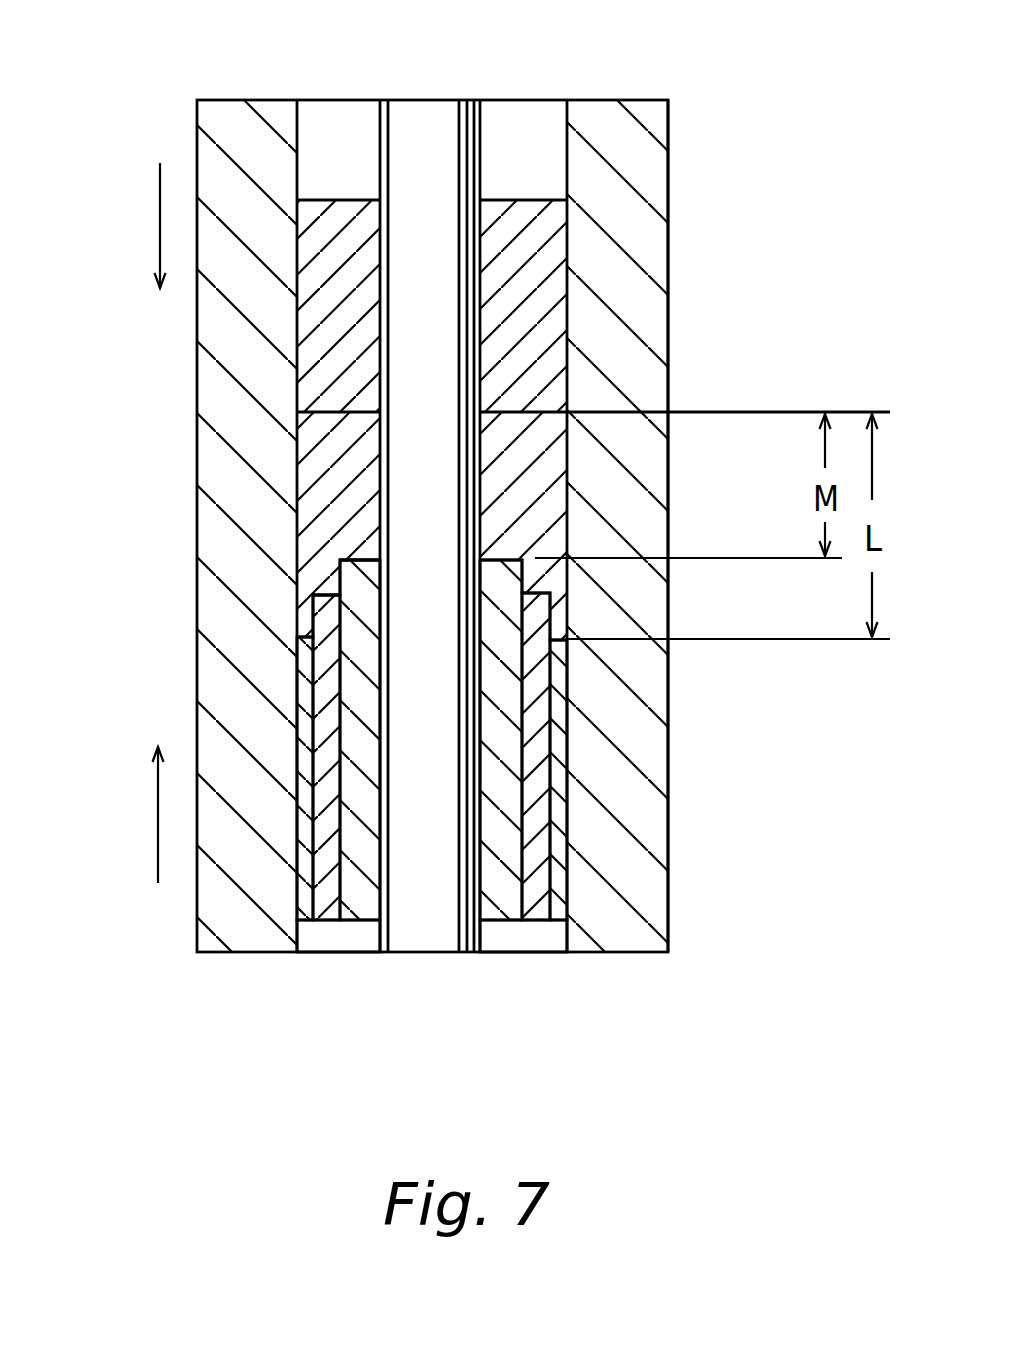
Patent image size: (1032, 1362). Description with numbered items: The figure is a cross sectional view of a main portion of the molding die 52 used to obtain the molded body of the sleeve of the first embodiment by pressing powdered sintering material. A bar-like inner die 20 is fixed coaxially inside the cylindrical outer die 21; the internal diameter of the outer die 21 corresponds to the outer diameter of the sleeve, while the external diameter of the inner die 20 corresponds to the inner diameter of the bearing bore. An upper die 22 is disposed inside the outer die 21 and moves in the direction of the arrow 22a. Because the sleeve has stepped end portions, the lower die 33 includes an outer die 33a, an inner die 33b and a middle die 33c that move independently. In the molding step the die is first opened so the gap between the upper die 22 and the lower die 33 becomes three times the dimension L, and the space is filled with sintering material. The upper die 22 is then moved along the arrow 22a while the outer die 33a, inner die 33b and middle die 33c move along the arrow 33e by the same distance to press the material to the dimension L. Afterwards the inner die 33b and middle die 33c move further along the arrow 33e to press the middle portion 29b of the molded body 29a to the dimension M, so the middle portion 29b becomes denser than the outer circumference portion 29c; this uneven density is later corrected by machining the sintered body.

The inner die 20 is at (432, 125).
The outer die 21 is at (605, 130).
The upper die 22 is at (333, 232).
The arrow 22a is at (158, 215).
The molded body 29a is at (338, 487).
The middle portion 29b is at (490, 521).
The outer circumference portion 29c is at (310, 557).
The lower die 33 is at (347, 957).
The outer die 33a is at (305, 880).
The inner die 33b is at (357, 903).
The middle die 33c is at (340, 907).
The arrow 33e is at (156, 818).
The molding die 52 is at (697, 175).